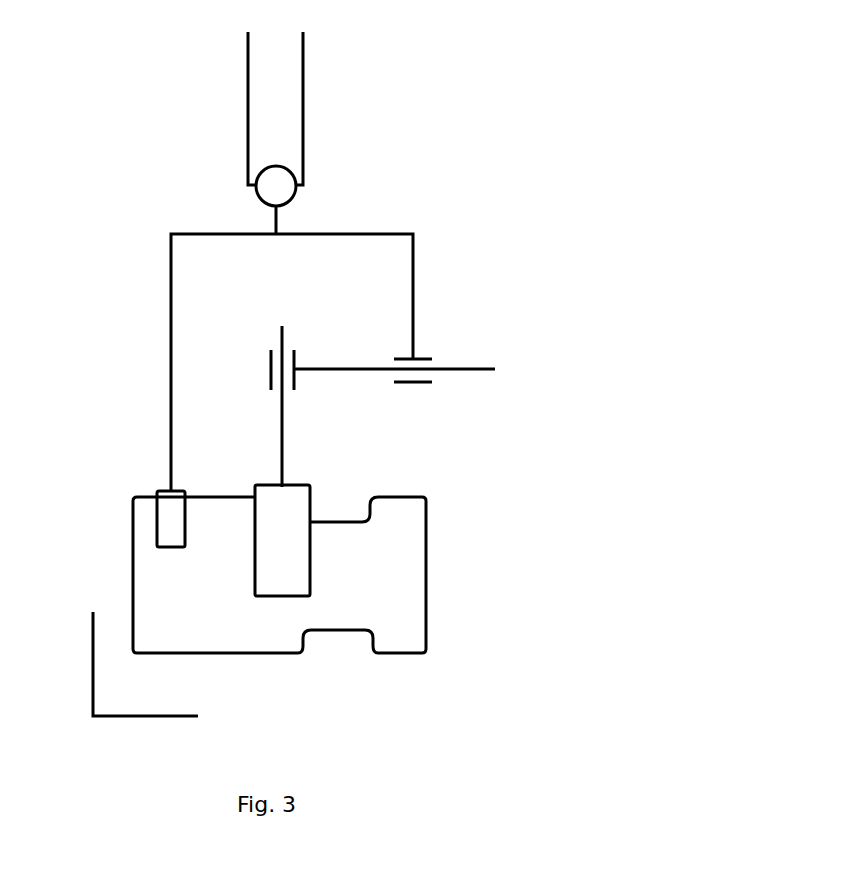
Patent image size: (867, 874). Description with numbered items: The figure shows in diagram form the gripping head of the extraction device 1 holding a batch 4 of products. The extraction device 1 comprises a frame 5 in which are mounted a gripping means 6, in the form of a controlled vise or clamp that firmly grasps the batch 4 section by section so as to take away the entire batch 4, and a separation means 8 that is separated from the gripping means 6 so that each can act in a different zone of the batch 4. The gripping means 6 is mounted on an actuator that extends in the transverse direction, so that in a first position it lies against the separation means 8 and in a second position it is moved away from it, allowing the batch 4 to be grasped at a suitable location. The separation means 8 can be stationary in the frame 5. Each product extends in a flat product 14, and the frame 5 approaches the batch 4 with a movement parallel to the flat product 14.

The extraction device 1 is at (605, 118).
The batch 4 is at (403, 564).
The frame 5 is at (388, 175).
The gripping means 6 is at (293, 516).
The separation means 8 is at (162, 517).
The flat product 14 is at (110, 697).